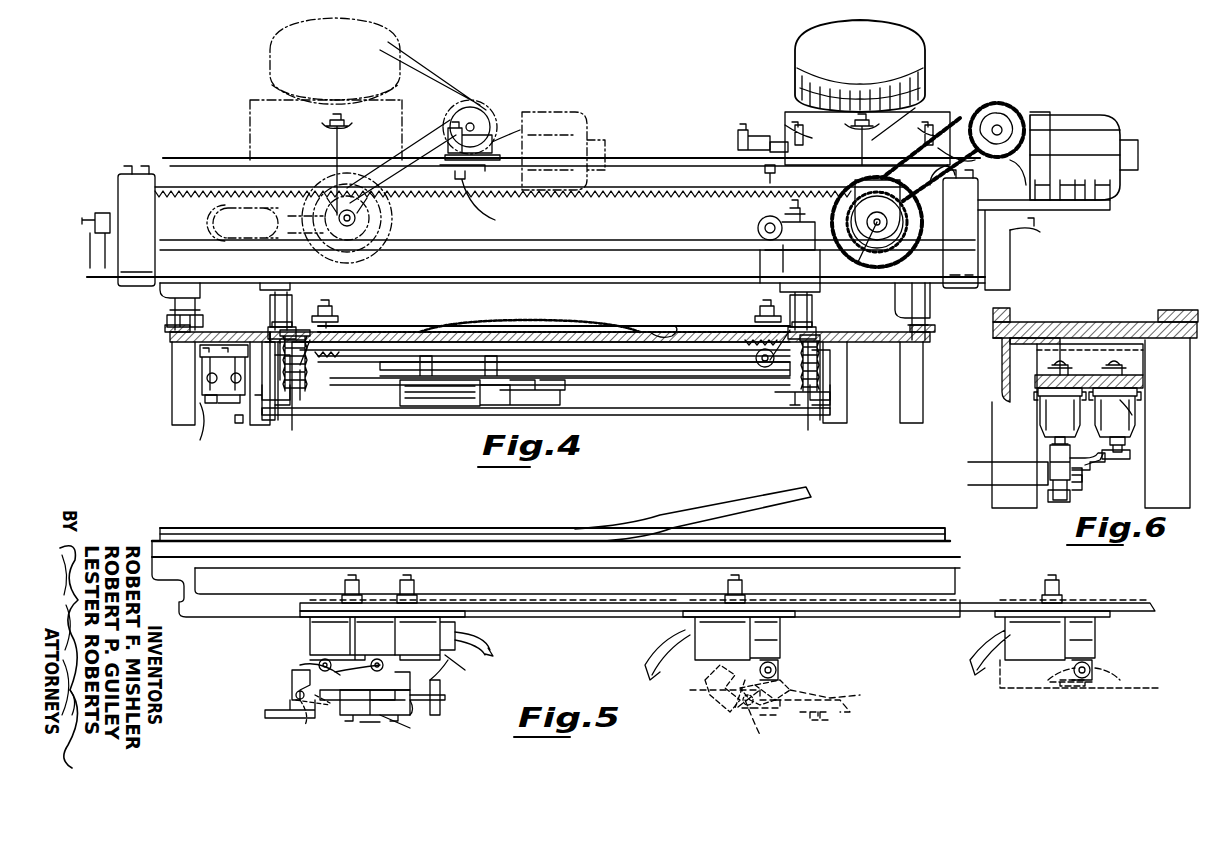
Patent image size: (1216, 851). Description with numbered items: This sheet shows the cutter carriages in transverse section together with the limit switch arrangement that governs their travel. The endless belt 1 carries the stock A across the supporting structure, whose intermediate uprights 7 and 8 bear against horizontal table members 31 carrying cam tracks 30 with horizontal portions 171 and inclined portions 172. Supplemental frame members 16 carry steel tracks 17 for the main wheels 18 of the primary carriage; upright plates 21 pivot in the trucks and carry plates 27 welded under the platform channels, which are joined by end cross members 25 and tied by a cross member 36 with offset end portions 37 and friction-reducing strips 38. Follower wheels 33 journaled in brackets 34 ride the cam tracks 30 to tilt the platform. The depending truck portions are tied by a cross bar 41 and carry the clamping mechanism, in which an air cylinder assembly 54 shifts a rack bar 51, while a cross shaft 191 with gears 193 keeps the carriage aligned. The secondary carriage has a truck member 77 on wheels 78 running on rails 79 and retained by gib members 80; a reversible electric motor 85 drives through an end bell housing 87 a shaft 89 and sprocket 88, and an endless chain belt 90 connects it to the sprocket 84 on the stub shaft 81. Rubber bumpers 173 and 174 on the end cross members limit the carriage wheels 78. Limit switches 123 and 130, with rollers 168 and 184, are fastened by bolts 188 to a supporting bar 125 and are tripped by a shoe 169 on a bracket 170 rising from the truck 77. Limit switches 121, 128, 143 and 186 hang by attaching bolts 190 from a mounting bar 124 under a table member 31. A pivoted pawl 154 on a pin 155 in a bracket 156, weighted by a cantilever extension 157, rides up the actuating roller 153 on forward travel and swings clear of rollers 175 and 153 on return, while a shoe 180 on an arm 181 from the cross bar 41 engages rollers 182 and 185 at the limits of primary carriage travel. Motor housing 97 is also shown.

In FIG. 4, the endless belt 1 is at (388, 328).
In FIG. 4, the intermediate uprights 7 is at (172, 397).
In FIG. 6, the intermediate uprights 8 is at (1010, 385).
In FIG. 4, the supplemental frame members 16 is at (278, 412).
In FIG. 4, the steel tracks 17 is at (270, 311).
In FIG. 4, the main wheels 18 is at (268, 300).
In FIG. 4, the upright plate 21 is at (262, 288).
In FIG. 4, the end cross members 25 is at (90, 263).
In FIG. 4, the plates 27 is at (278, 280).
In FIG. 4, the cam tracks 30 is at (930, 345).
In FIG. 6, the cam tracks 30 is at (1172, 308).
In FIG. 5, the cam tracks 30 is at (430, 527).
In FIG. 4, the table members 31 is at (222, 338).
In FIG. 6, the table members 31 is at (1070, 322).
In FIG. 5, the table members 31 is at (530, 550).
In FIG. 4, the follower wheels 33 is at (172, 332).
In FIG. 4, the brackets 34 is at (200, 290).
In FIG. 4, the cross member 36 is at (412, 340).
In FIG. 4, the offset end portions 37 is at (312, 310).
In FIG. 4, the strips 38 is at (668, 330).
In FIG. 4, the cross bar 41 is at (612, 410).
In FIG. 6, the cross bar 41 is at (978, 478).
In FIG. 5, the cross bar 41 is at (415, 718).
In FIG. 4, the rack bar 51 is at (395, 385).
In FIG. 4, the air cylinder assembly 54 is at (430, 403).
In FIG. 4, the truck member 77 is at (768, 252).
In FIG. 4, the wheels 78 is at (757, 225).
In FIG. 4, the rails 79 is at (597, 250).
In FIG. 4, the gib members 80 is at (818, 267).
In FIG. 4, the stub shaft 81 is at (848, 267).
In FIG. 4, the sprocket 84 is at (881, 227).
In FIG. 4, the reversible electric motor 85 is at (588, 115).
In FIG. 4, the end bell housing 87 is at (1012, 112).
In FIG. 4, the sprocket 88 is at (997, 103).
In FIG. 4, the shaft 89 is at (1002, 128).
In FIG. 4, the endless chain belt 90 is at (960, 132).
In FIG. 4, the motor housing 97 is at (272, 48).
In FIG. 4, the limit switch 121 is at (200, 368).
In FIG. 6, the limit switch 121 is at (1048, 406).
In FIG. 5, the limit switch 121 is at (316, 624).
In FIG. 4, the limit switch 123 is at (480, 138).
In FIG. 6, the mounting bar 124 is at (1098, 375).
In FIG. 5, the mounting bar 124 is at (556, 600).
In FIG. 4, the supporting bar 125 is at (642, 170).
In FIG. 5, the limit switch 128 is at (700, 650).
In FIG. 4, the limit switch 130 is at (768, 138).
In FIG. 5, the limit switch 143 is at (1035, 665).
In FIG. 6, the actuating roller 153 is at (1056, 442).
In FIG. 5, the actuating roller 153 is at (300, 665).
In FIG. 6, the pivoted pawl 154 is at (1050, 449).
In FIG. 5, the pivoted pawl 154 is at (293, 672).
In FIG. 6, the pin 155 is at (1083, 478).
In FIG. 5, the pin 155 is at (300, 712).
In FIG. 6, the bracket 156 is at (1060, 505).
In FIG. 5, the bracket 156 is at (345, 722).
In FIG. 5, the cantilever extension 157 is at (265, 715).
In FIG. 4, the roller 168 is at (470, 107).
In FIG. 4, the shoe 169 is at (320, 133).
In FIG. 4, the bracket 170 is at (861, 129).
In FIG. 5, the horizontal portions 171 is at (370, 527).
In FIG. 5, the inclined portions 172 is at (660, 515).
In FIG. 4, the rubber bumper 173 is at (98, 213).
In FIG. 4, the rubber bumper 174 is at (1022, 226).
In FIG. 5, the roller 175 is at (780, 668).
In FIG. 6, the shoe 180 is at (1130, 455).
In FIG. 5, the shoe 180 is at (432, 685).
In FIG. 4, the arm 181 is at (225, 410).
In FIG. 6, the arm 181 is at (1098, 463).
In FIG. 5, the roller 182 is at (1092, 672).
In FIG. 4, the roller 184 is at (740, 128).
In FIG. 6, the roller 185 is at (1147, 427).
In FIG. 5, the roller 185 is at (478, 660).
In FIG. 4, the limit switch 186 is at (191, 424).
In FIG. 6, the limit switch 186 is at (1128, 403).
In FIG. 5, the limit switch 186 is at (432, 622).
In FIG. 4, the bolts 188 is at (760, 170).
In FIG. 5, the attaching bolts 190 is at (348, 578).
In FIG. 4, the cross shaft 191 is at (676, 368).
In FIG. 4, the gears 193 is at (802, 410).
In FIG. 4, the stock A is at (555, 320).